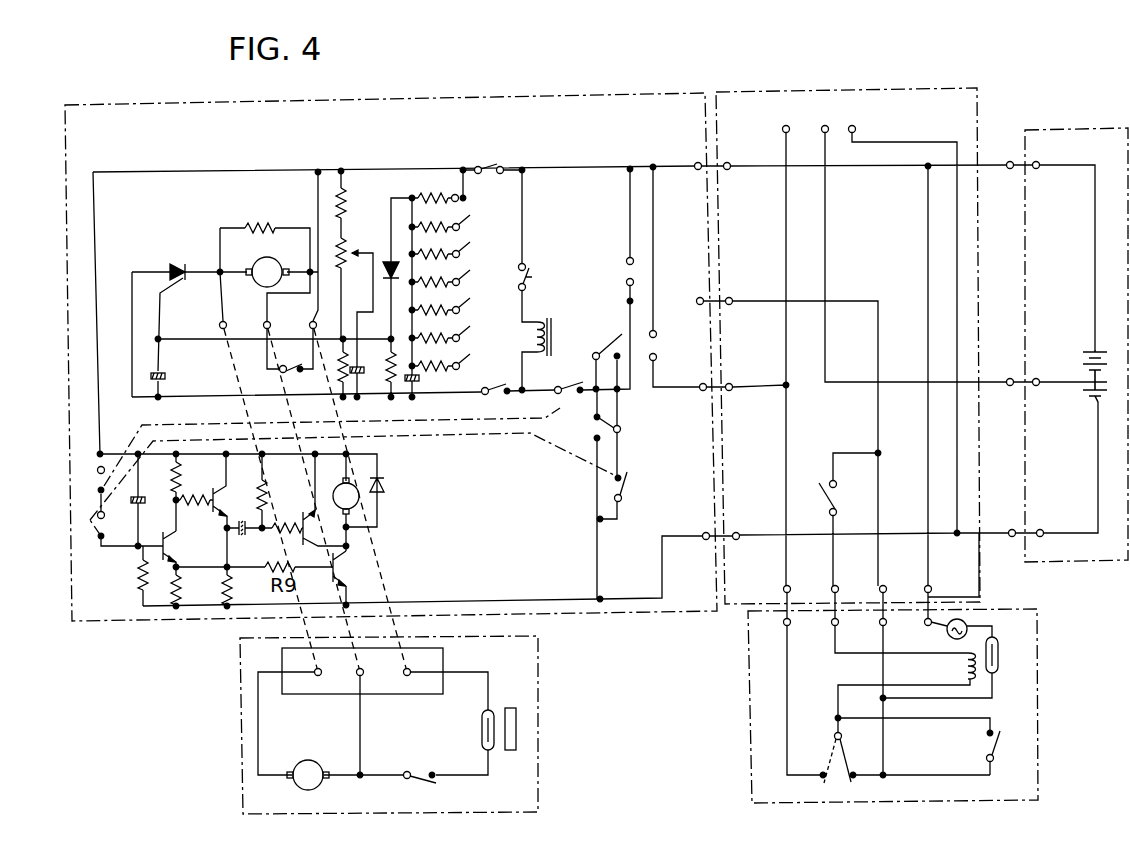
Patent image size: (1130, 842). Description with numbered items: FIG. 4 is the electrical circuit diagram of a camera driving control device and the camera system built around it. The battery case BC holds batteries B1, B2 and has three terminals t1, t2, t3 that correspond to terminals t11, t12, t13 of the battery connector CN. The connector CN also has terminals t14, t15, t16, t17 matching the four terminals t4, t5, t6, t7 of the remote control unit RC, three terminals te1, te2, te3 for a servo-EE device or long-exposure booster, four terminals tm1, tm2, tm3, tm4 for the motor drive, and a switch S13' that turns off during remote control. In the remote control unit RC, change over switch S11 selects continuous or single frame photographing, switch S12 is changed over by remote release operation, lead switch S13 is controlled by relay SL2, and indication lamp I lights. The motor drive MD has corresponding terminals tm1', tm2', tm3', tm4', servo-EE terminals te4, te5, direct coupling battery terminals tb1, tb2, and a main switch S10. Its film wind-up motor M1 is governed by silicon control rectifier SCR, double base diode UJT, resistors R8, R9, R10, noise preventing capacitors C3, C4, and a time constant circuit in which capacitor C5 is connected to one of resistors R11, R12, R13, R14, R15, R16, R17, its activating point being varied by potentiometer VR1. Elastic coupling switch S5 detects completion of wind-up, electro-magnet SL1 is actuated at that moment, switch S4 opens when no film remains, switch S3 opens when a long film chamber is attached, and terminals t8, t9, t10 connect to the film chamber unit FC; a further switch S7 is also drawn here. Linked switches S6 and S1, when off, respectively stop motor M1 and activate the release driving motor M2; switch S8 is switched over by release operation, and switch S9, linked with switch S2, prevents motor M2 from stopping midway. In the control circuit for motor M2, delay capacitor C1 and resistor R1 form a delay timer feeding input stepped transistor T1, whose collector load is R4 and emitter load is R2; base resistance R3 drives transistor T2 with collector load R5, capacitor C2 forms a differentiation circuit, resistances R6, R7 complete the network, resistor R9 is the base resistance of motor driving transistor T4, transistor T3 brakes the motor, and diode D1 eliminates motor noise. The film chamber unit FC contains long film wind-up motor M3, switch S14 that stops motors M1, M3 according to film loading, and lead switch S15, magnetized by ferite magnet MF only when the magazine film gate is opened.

The motor drive MD is at (578, 93).
The battery connector CN is at (865, 90).
The battery case BC is at (1050, 130).
The film chamber unit FC is at (538, 672).
The remote control unit RC is at (1038, 672).
The silicon control rectifier SCR is at (177, 262).
The resistor R8 is at (260, 215).
The film wind-up motor M1 is at (267, 272).
The resistor R9 is at (355, 203).
The double base diode UJT is at (374, 253).
The potentiometer VR1 is at (343, 265).
The resistor R11 is at (437, 186).
The resistor R12 is at (457, 216).
The resistor R13 is at (457, 244).
The resistor R14 is at (457, 272).
The resistor R15 is at (457, 300).
The resistor R16 is at (457, 328).
The resistor R17 is at (457, 356).
The main switch S10 is at (492, 156).
The elastic coupling switch S5 is at (544, 281).
The electro-magnet SL1 is at (565, 337).
The direct coupling battery terminal tb1 is at (613, 256).
The direct coupling battery terminal tb2 is at (613, 290).
The noise preventing capacitor C3 is at (175, 376).
The noise preventing capacitor C4 is at (369, 358).
The time constant capacitor C5 is at (431, 377).
The resistor R10 is at (333, 366).
The switch S3 is at (290, 359).
The terminal t8 is at (270, 487).
The terminal t9 is at (314, 487).
The terminal t10 is at (367, 487).
The switch S4 is at (489, 377).
The linked switch S6 is at (568, 375).
The switch S7 is at (609, 340).
The switch S8 is at (593, 430).
The switch S9 is at (635, 487).
The linked switch S1 is at (87, 479).
The switch S2 is at (115, 529).
The delay capacitor C1 is at (151, 490).
The emitter load resistor R2 is at (191, 477).
The resistance R7 is at (195, 513).
The input stepped transistor T1 is at (185, 549).
The resistor R1 is at (157, 575).
The base resistance R3 is at (192, 590).
The transistor T2 is at (234, 491).
The differentiation circuit capacitor C2 is at (246, 540).
The collector load R4 is at (243, 590).
The collector load R5 is at (275, 490).
The resistance R6 is at (285, 540).
The motor driving control transistor T4 is at (316, 500).
The motor braking transistor T3 is at (355, 568).
The release driving motor M2 is at (352, 498).
The diode D1 is at (381, 490).
The motor drive terminal tm1' is at (683, 154).
The motor drive terminal tm2' is at (685, 289).
The motor drive terminal tm3' is at (688, 404).
The motor drive terminal tm4' is at (691, 523).
The servo-EE terminal te4 is at (674, 326).
The servo-EE terminal te5 is at (674, 365).
The motor drive connection terminal tm1 is at (743, 154).
The motor drive connection terminal tm2 is at (745, 289).
The motor drive connection terminal tm3 is at (750, 404).
The motor drive connection terminal tm4 is at (754, 523).
The servo-EE connection terminal te1 is at (773, 118).
The servo-EE connection terminal te2 is at (812, 118).
The servo-EE connection terminal te3 is at (854, 118).
The switch S13' is at (812, 498).
The terminal t14 is at (772, 590).
The terminal t15 is at (820, 590).
The terminal t16 is at (868, 590).
The terminal t17 is at (913, 590).
The terminal t11 is at (1004, 179).
The terminal t12 is at (1004, 368).
The terminal t13 is at (1004, 519).
The terminal t1 is at (1036, 179).
The terminal t2 is at (1038, 368).
The terminal t3 is at (1038, 519).
The battery B1 is at (1082, 365).
The battery B2 is at (1081, 397).
The long length film wind-up motor M3 is at (308, 764).
The switch S14 is at (417, 763).
The lead switch S15 is at (471, 730).
The ferite magnet MF is at (517, 730).
The terminal t4 is at (774, 632).
The terminal t5 is at (822, 632).
The terminal t6 is at (871, 632).
The terminal t7 is at (917, 632).
The indication lamp I is at (951, 633).
The relay SL2 is at (950, 669).
The lead switch S13 is at (1012, 655).
The switch S12 is at (825, 758).
The change over switch S11 is at (1013, 748).